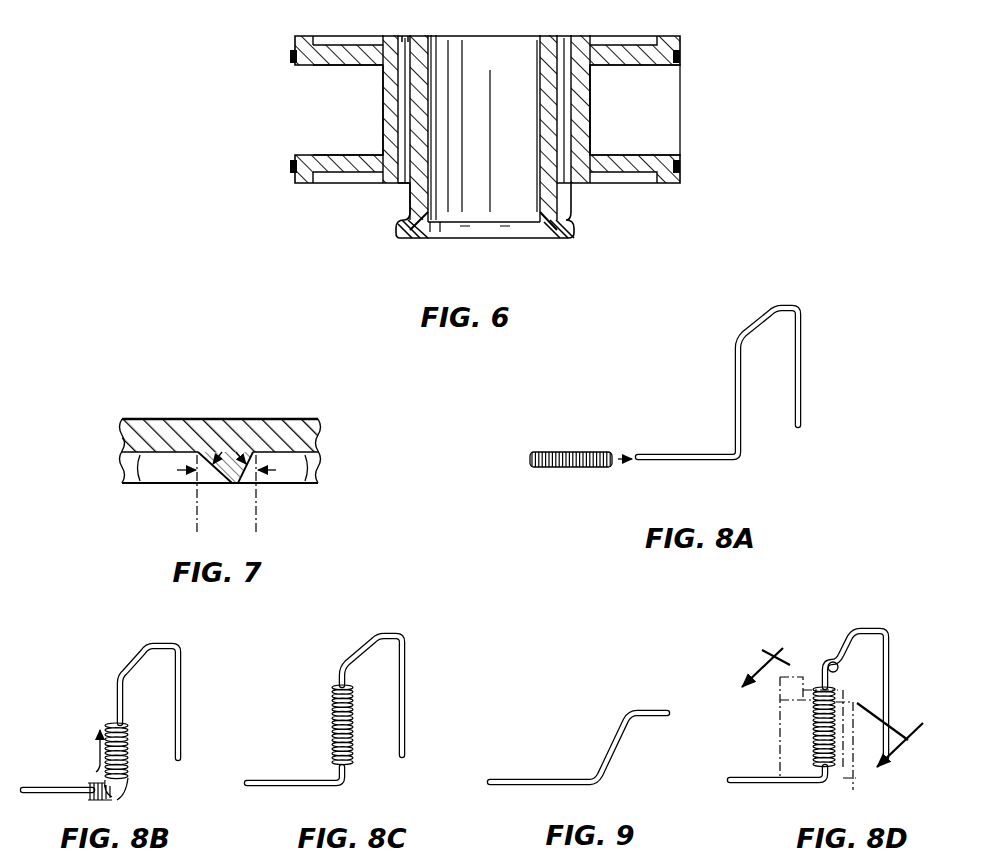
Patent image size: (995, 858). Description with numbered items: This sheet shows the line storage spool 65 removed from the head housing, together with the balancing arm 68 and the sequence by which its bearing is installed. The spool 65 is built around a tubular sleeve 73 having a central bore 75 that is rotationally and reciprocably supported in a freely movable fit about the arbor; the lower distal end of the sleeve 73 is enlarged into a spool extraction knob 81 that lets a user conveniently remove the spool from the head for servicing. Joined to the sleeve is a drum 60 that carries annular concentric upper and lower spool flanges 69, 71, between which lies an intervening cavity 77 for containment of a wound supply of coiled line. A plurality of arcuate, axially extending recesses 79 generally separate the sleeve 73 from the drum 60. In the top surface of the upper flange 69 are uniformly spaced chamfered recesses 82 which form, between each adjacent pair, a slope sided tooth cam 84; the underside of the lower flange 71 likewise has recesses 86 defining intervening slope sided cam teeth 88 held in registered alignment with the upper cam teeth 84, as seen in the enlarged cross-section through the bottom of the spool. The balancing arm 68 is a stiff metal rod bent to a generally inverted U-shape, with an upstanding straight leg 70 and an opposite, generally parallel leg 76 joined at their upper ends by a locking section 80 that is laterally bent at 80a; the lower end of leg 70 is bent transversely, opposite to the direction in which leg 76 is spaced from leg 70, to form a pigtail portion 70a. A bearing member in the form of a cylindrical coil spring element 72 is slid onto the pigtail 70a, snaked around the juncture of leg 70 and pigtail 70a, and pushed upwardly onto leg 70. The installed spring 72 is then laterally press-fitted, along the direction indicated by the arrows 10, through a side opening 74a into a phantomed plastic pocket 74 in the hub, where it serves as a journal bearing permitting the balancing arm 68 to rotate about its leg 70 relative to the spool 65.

In FIG. 8D, the section line / viewing direction 10 is at (845, 694).
In FIG. 6, the drum 60 is at (392, 120).
In FIG. 6, the spool 65 is at (325, 100).
In FIG. 8A, the balancing arm 68 is at (744, 325).
In FIG. 8B, the balancing arm 68 is at (128, 649).
In FIG. 8C, the balancing arm 68 is at (354, 646).
In FIG. 9, the balancing arm 68 is at (598, 743).
In FIG. 8D, the balancing arm 68 is at (845, 627).
In FIG. 6, the upper spool flange 69 is at (355, 70).
In FIG. 8A, the upstanding straight leg 70 is at (734, 408).
In FIG. 8B, the upstanding straight leg 70 is at (115, 697).
In FIG. 8C, the upstanding straight leg 70 is at (334, 683).
In FIG. 8D, the upstanding straight leg 70 is at (830, 668).
In FIG. 8A, the pigtail portion 70a is at (688, 462).
In FIG. 8B, the pigtail portion 70a is at (62, 786).
In FIG. 8C, the pigtail portion 70a is at (284, 781).
In FIG. 9, the pigtail portion 70a is at (539, 780).
In FIG. 8D, the pigtail portion 70a is at (746, 778).
In FIG. 6, the lower spool flange 71 is at (340, 155).
In FIG. 7, the lower spool flange 71 is at (228, 420).
In FIG. 8A, the coil spring element 72 is at (560, 452).
In FIG. 8B, the coil spring element 72 is at (130, 768).
In FIG. 8C, the coil spring element 72 is at (331, 733).
In FIG. 8D, the coil spring element 72 is at (812, 727).
In FIG. 6, the tubular sleeve 73 is at (425, 157).
In FIG. 8D, the plastic pocket 74 is at (857, 783).
In FIG. 8D, the side opening 74a is at (839, 681).
In FIG. 6, the central bore 75 is at (438, 196).
In FIG. 8A, the opposite leg 76 is at (803, 389).
In FIG. 8B, the opposite leg 76 is at (180, 708).
In FIG. 8C, the opposite leg 76 is at (408, 703).
In FIG. 8D, the opposite leg 76 is at (889, 692).
In FIG. 6, the intervening cavity 77 is at (630, 114).
In FIG. 6, the arcuate axially extending recesses 79 is at (403, 44).
In FIG. 8A, the locking section 80 is at (735, 341).
In FIG. 8B, the locking section 80 is at (118, 670).
In FIG. 8C, the locking section 80 is at (340, 668).
In FIG. 9, the locking section 80 is at (618, 746).
In FIG. 8D, the locking section 80 is at (838, 658).
In FIG. 8A, the lateral bend 80a is at (773, 308).
In FIG. 8B, the lateral bend 80a is at (160, 643).
In FIG. 8C, the lateral bend 80a is at (395, 638).
In FIG. 9, the lateral bend 80a is at (632, 710).
In FIG. 8D, the lateral bend 80a is at (878, 632).
In FIG. 6, the spool extraction knob 81 is at (398, 229).
In FIG. 6, the chamfered recesses 82 is at (328, 42).
In FIG. 6, the slope sided tooth cam 84 is at (365, 42).
In FIG. 6, the recesses 86 is at (318, 173).
In FIG. 7, the recesses 86 is at (150, 483).
In FIG. 6, the slope sided cam teeth 88 is at (350, 180).
In FIG. 7, the slope sided cam teeth 88 is at (236, 484).